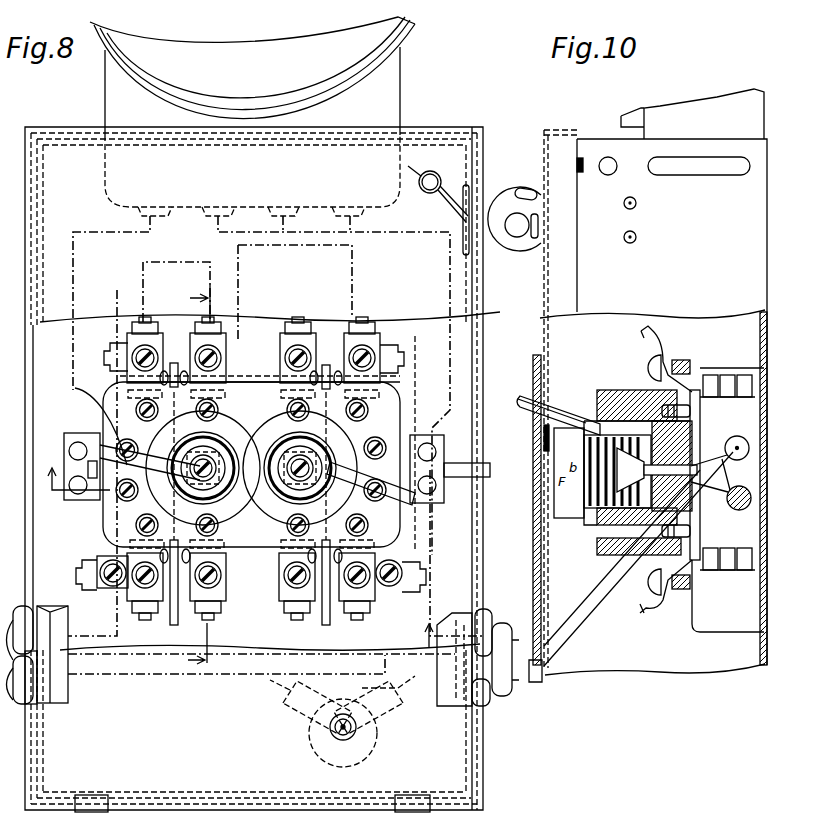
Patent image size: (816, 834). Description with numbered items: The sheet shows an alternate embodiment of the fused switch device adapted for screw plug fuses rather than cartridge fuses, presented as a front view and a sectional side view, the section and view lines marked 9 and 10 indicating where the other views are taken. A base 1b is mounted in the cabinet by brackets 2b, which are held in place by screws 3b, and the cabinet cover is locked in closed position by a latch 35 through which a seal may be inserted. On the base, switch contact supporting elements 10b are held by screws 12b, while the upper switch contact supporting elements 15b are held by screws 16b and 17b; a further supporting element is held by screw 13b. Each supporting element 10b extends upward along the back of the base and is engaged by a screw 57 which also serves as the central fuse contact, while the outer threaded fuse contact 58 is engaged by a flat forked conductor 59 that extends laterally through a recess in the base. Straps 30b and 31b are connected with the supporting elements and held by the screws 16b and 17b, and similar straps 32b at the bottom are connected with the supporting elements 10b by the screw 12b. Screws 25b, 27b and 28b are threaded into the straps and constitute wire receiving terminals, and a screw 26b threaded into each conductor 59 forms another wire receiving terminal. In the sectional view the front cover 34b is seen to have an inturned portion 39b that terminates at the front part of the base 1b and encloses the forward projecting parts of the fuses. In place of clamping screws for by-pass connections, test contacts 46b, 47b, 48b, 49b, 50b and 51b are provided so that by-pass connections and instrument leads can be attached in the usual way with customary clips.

In FIG. 8, the base 1b is at (112, 535).
In FIG. 10, the base 1b is at (634, 390).
In FIG. 8, the brackets 2b is at (78, 500).
In FIG. 8, the screws 3b is at (120, 499).
In FIG. 8, the section line 9- 9 is at (237, 550).
In FIG. 8, the section line 10- 10 is at (186, 478).
In FIG. 10, the switch contact supporting element 10b is at (747, 547).
In FIG. 8, the screw 12b is at (290, 518).
In FIG. 10, the screw 12b is at (662, 531).
In FIG. 8, the screw 13b is at (366, 526).
In FIG. 10, the switch contact supporting elements 15b is at (757, 401).
In FIG. 8, the screw 16b is at (292, 412).
In FIG. 10, the screw 16b is at (662, 414).
In FIG. 8, the screw 17b is at (367, 411).
In FIG. 8, the screw 25b is at (113, 586).
In FIG. 8, the screw 26b is at (116, 396).
In FIG. 8, the screw 27b is at (303, 362).
In FIG. 10, the screw 27b is at (672, 365).
In FIG. 8, the screw 28b is at (369, 351).
In FIG. 8, the strap 30b is at (284, 392).
In FIG. 10, the strap 30b is at (651, 372).
In FIG. 8, the strap 31b is at (311, 386).
In FIG. 8, the straps 32b is at (286, 558).
In FIG. 10, the front cover 34b is at (544, 338).
In FIG. 8, the latch 35 is at (466, 228).
In FIG. 10, the inturned portion 39b is at (561, 403).
In FIG. 8, the test contact 46b is at (87, 586).
In FIG. 8, the test contact 47b is at (112, 366).
In FIG. 8, the test contact 48b is at (145, 622).
In FIG. 8, the test contact 49b is at (208, 330).
In FIG. 8, the test contact 50b is at (147, 322).
In FIG. 8, the test contact 51b is at (320, 613).
In FIG. 8, the screw 57 is at (270, 455).
In FIG. 10, the screw 57 is at (691, 465).
In FIG. 8, the outer threaded fuse contact 58 is at (273, 487).
In FIG. 10, the outer threaded fuse contact 58 is at (690, 447).
In FIG. 8, the flat forked conductor 59 is at (297, 440).
In FIG. 10, the flat forked conductor 59 is at (654, 436).